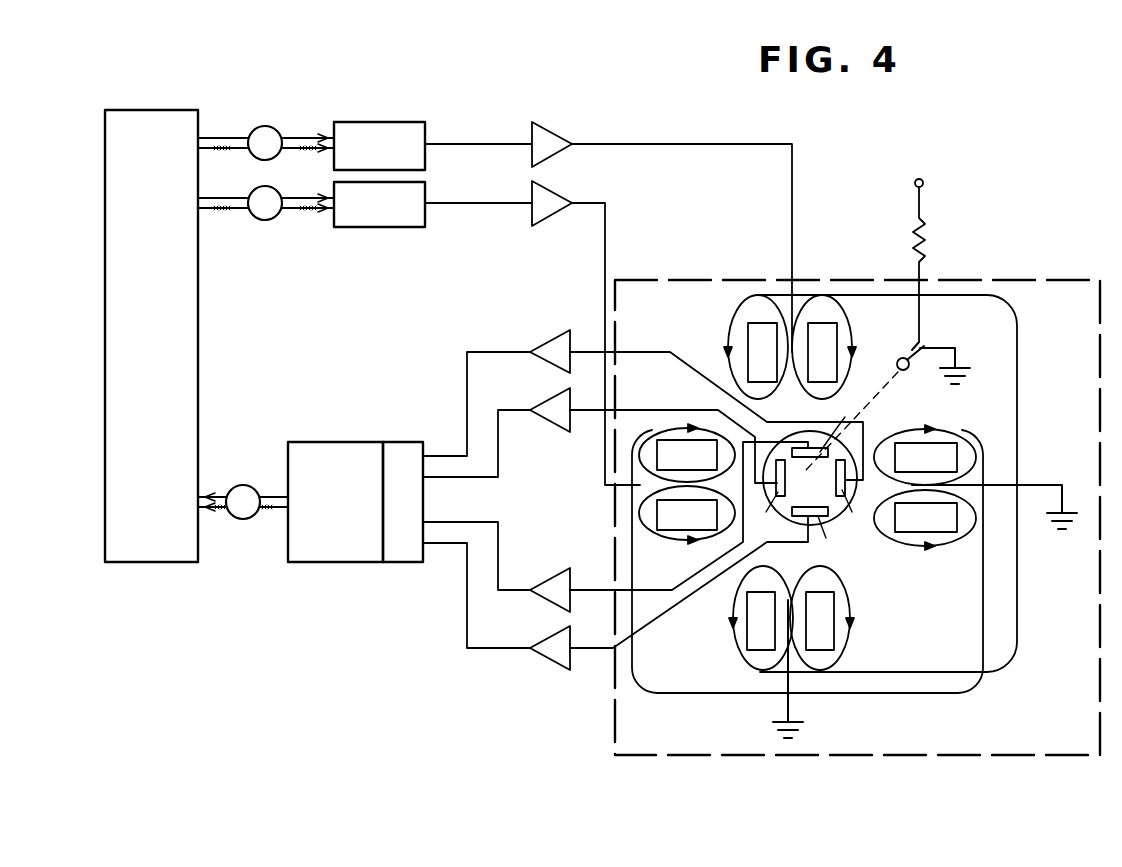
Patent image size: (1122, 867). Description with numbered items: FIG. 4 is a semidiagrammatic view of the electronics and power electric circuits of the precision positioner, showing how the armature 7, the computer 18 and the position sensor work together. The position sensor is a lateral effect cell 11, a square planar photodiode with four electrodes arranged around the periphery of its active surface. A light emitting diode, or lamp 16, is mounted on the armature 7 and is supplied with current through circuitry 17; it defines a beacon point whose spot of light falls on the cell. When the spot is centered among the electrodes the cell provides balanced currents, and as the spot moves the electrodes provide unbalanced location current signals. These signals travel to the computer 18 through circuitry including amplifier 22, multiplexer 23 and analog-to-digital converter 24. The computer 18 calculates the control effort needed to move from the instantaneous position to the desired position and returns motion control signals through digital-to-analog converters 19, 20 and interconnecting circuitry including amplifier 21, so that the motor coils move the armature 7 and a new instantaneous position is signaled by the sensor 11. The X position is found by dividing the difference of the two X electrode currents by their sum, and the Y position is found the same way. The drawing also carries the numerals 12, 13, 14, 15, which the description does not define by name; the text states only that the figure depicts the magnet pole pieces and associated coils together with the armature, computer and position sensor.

The armature 7 is at (1033, 270).
The lateral effect cell 11 is at (798, 471).
The bus lines / electrode pair 12 is at (826, 600).
The right electrode pair 13 is at (907, 530).
The top electrode pair 14 is at (828, 336).
The left electrode pair 15 is at (673, 522).
The light emitting diode 16 is at (912, 358).
The circuitry 17 is at (922, 234).
The computer 18 is at (140, 110).
The digital-to-analog converter 19 is at (360, 122).
The digital-to-analog converter 20 is at (368, 227).
The amplifier 21 is at (545, 122).
The amplifier 22 is at (557, 330).
The multiplexer 23 is at (405, 442).
The analog-to-digital converter 24 is at (332, 442).